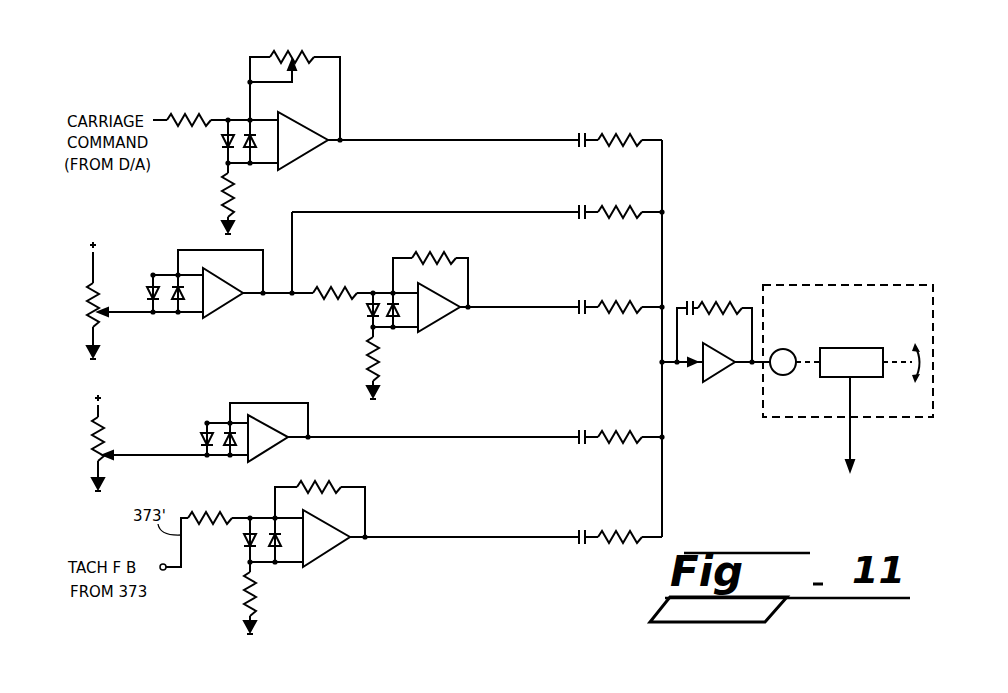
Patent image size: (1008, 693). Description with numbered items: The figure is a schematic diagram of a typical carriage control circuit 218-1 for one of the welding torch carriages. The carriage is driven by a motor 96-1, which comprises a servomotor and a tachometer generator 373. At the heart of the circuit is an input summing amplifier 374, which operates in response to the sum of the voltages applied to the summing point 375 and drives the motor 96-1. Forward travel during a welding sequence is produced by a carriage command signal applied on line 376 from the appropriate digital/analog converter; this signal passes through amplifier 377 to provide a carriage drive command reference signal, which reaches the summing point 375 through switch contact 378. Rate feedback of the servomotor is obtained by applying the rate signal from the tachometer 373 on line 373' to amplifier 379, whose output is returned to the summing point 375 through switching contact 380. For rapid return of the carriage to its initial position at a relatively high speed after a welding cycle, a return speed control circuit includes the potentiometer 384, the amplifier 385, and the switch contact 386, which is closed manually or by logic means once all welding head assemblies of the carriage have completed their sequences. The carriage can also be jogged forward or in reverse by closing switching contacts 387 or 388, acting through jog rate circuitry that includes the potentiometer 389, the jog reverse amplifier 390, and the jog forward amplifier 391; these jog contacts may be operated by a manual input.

The line 376 is at (158, 118).
The amplifier 377 is at (315, 148).
The switch contact 378 is at (582, 133).
The switching contact 387 is at (587, 222).
The switching contact 388 is at (587, 318).
The potentiometer 389 is at (102, 290).
The jog reverse amplifier 390 is at (227, 305).
The jog forward amplifier 391 is at (440, 320).
The summing point 375 is at (661, 363).
The input summing amplifier 374 is at (722, 370).
The motor 96-1 is at (793, 284).
The tachometer generator 373 is at (870, 343).
The line 373' is at (879, 424).
The carriage control circuit 218-1 is at (694, 133).
The potentiometer 384 is at (107, 447).
The amplifier 385 is at (275, 445).
The switch contact 386 is at (585, 448).
The amplifier 379 is at (335, 547).
The switching contact 380 is at (587, 530).